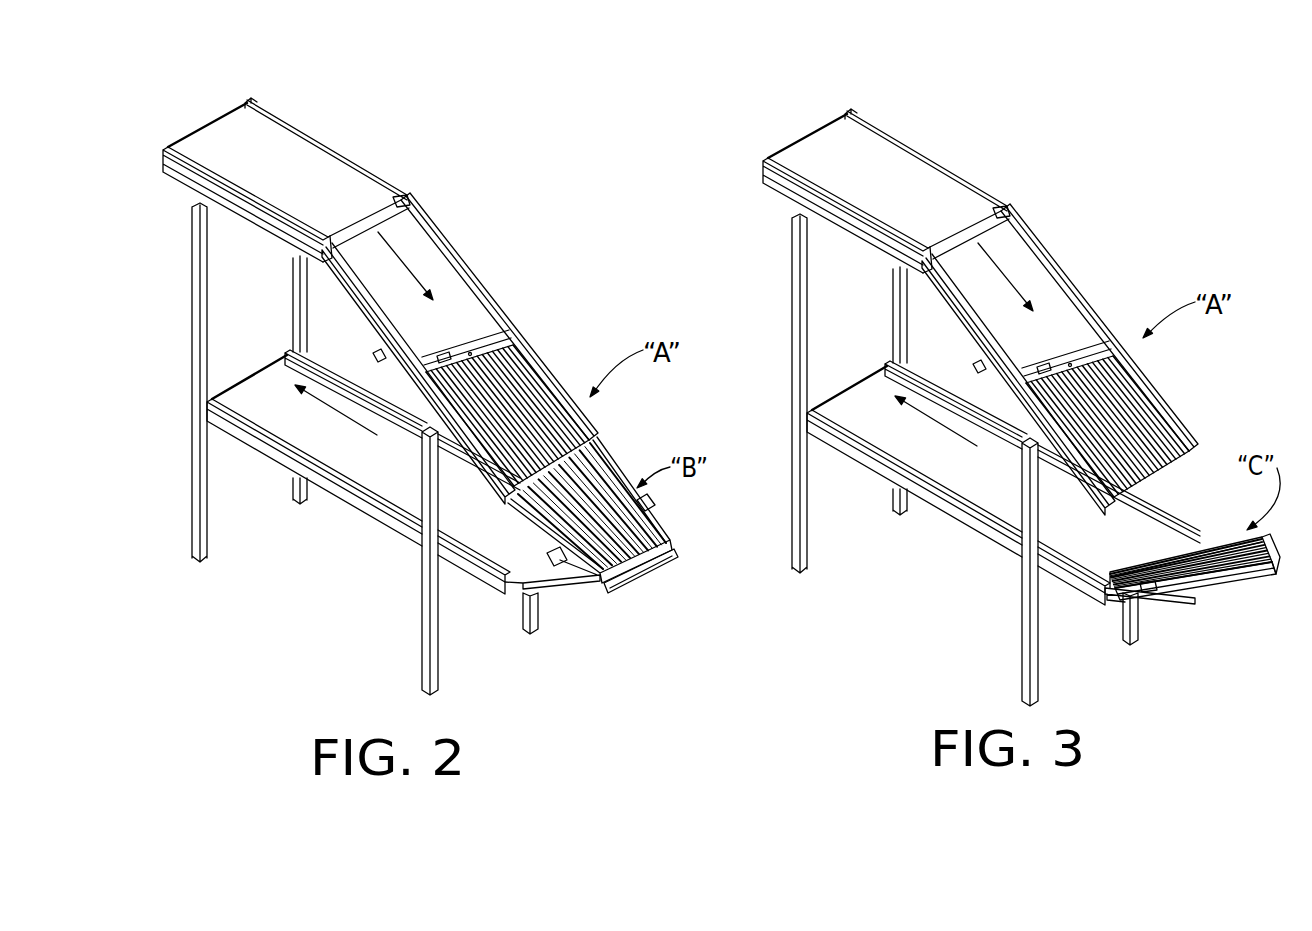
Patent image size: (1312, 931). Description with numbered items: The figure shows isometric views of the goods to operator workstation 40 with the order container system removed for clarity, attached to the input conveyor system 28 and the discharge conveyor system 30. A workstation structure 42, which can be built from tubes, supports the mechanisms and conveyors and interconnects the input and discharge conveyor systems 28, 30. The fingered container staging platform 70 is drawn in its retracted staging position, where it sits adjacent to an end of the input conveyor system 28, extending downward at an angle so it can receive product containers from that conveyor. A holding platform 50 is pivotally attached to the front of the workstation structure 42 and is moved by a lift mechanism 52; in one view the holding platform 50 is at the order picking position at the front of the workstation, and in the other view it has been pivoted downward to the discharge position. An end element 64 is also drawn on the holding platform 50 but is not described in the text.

In FIG. 2, the input conveyor system 28 is at (287, 147).
In FIG. 3, the input conveyor system 28 is at (877, 148).
In FIG. 2, the discharge conveyor system 30 is at (267, 380).
In FIG. 3, the discharge conveyor system 30 is at (870, 392).
In FIG. 2, the goods to operator workstation 40 is at (492, 348).
In FIG. 3, the goods to operator workstation 40 is at (1070, 359).
In FIG. 2, the workstation structure 42 is at (191, 268).
In FIG. 3, the workstation structure 42 is at (797, 275).
In FIG. 2, the holding platform 50 is at (610, 470).
In FIG. 3, the holding platform 50 is at (1205, 530).
In FIG. 2, the lift mechanism 52 is at (523, 588).
In FIG. 3, the lift mechanism 52 is at (1128, 597).
In FIG. 2, the end stop 64 is at (670, 557).
In FIG. 3, the end stop 64 is at (1266, 565).
In FIG. 2, the fingered container staging platform 70 is at (520, 370).
In FIG. 3, the fingered container staging platform 70 is at (1130, 385).